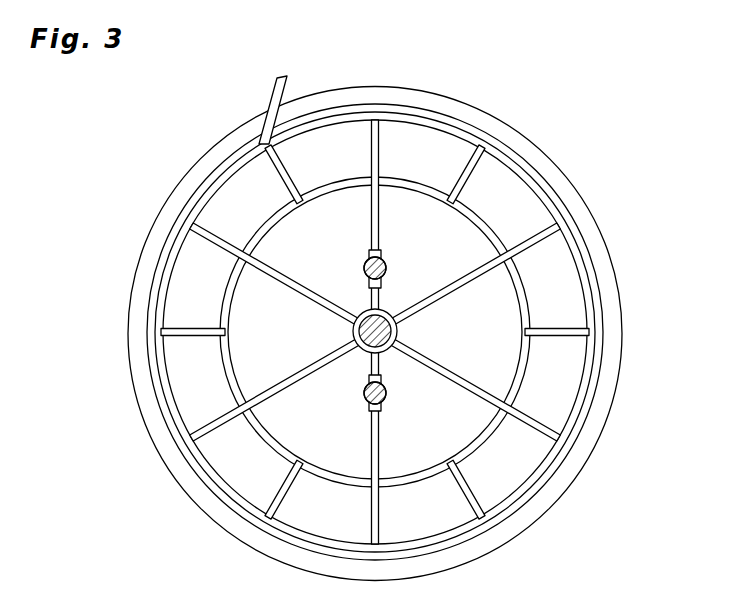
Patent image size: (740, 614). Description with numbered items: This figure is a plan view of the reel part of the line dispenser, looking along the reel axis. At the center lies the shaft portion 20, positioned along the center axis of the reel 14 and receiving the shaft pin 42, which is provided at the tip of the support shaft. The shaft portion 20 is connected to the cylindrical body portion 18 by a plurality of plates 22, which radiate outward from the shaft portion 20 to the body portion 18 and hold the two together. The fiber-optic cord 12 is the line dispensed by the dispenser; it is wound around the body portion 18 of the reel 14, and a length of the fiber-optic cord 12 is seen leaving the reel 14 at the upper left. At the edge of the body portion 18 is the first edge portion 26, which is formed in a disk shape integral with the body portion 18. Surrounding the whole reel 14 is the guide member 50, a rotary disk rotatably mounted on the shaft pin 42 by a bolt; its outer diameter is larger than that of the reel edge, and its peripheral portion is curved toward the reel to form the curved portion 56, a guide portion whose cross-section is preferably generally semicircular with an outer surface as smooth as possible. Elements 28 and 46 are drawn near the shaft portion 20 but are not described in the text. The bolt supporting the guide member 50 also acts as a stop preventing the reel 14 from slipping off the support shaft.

The fiber-optic cord 12 is at (288, 94).
The reel 14 is at (557, 193).
The body portion 18 is at (522, 352).
The shaft portion 20 is at (400, 333).
The plates 22 is at (478, 278).
The first edge portion 26 is at (572, 384).
The pins 28 is at (363, 265).
The shaft pin 42 is at (350, 332).
The pin collars 46 is at (386, 266).
The guide member 50 is at (606, 230).
The curved portion 56 is at (590, 443).